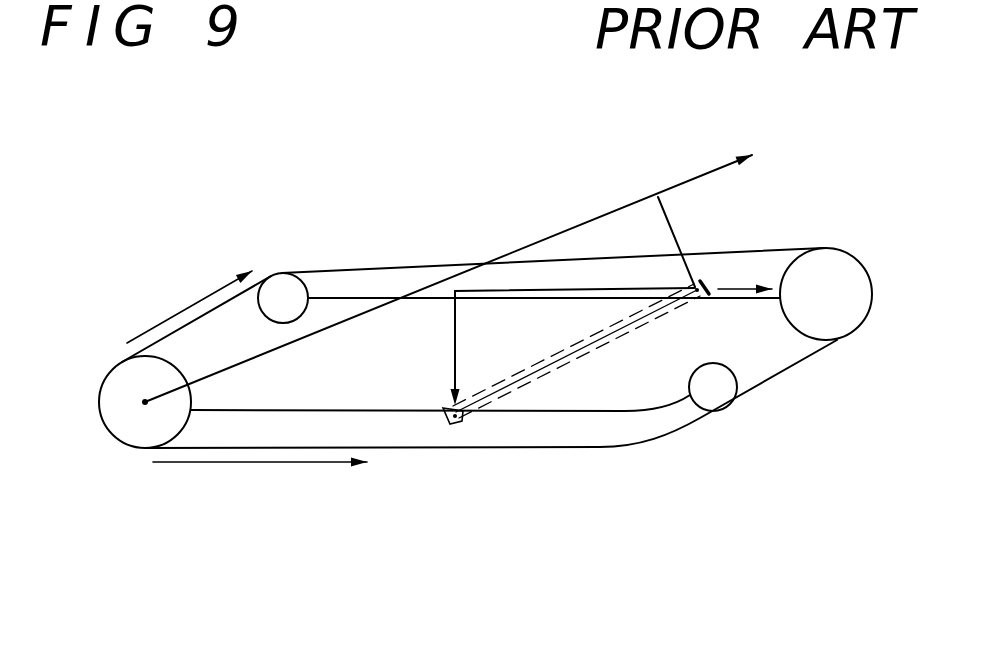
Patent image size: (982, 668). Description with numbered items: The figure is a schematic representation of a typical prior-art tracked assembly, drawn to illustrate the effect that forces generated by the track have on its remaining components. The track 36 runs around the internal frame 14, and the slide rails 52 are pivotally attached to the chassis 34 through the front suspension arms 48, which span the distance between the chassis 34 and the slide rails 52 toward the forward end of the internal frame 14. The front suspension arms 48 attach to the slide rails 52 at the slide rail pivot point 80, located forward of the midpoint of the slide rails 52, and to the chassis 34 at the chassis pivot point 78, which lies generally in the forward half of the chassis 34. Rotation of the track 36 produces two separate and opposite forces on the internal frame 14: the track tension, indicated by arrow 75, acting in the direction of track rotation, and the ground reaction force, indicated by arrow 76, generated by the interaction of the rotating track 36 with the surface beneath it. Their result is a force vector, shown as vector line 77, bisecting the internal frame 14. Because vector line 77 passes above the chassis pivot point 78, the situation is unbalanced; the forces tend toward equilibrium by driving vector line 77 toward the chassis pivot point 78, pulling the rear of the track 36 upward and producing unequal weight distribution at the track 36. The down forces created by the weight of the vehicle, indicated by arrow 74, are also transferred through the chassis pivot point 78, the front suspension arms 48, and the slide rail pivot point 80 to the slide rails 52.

The internal frame 14 is at (533, 425).
The chassis 34 is at (398, 277).
The track 36 is at (337, 267).
The front suspension arms 48 is at (643, 335).
The slide rails 52 is at (613, 423).
The arrow indicating down forces 74 is at (448, 351).
The arrow indicating track tension 75 is at (177, 305).
The arrow indicating ground reaction force 76 is at (238, 467).
The vector line 77 is at (580, 217).
The chassis pivot point 78 is at (705, 283).
The slide rail pivot point 80 is at (455, 430).